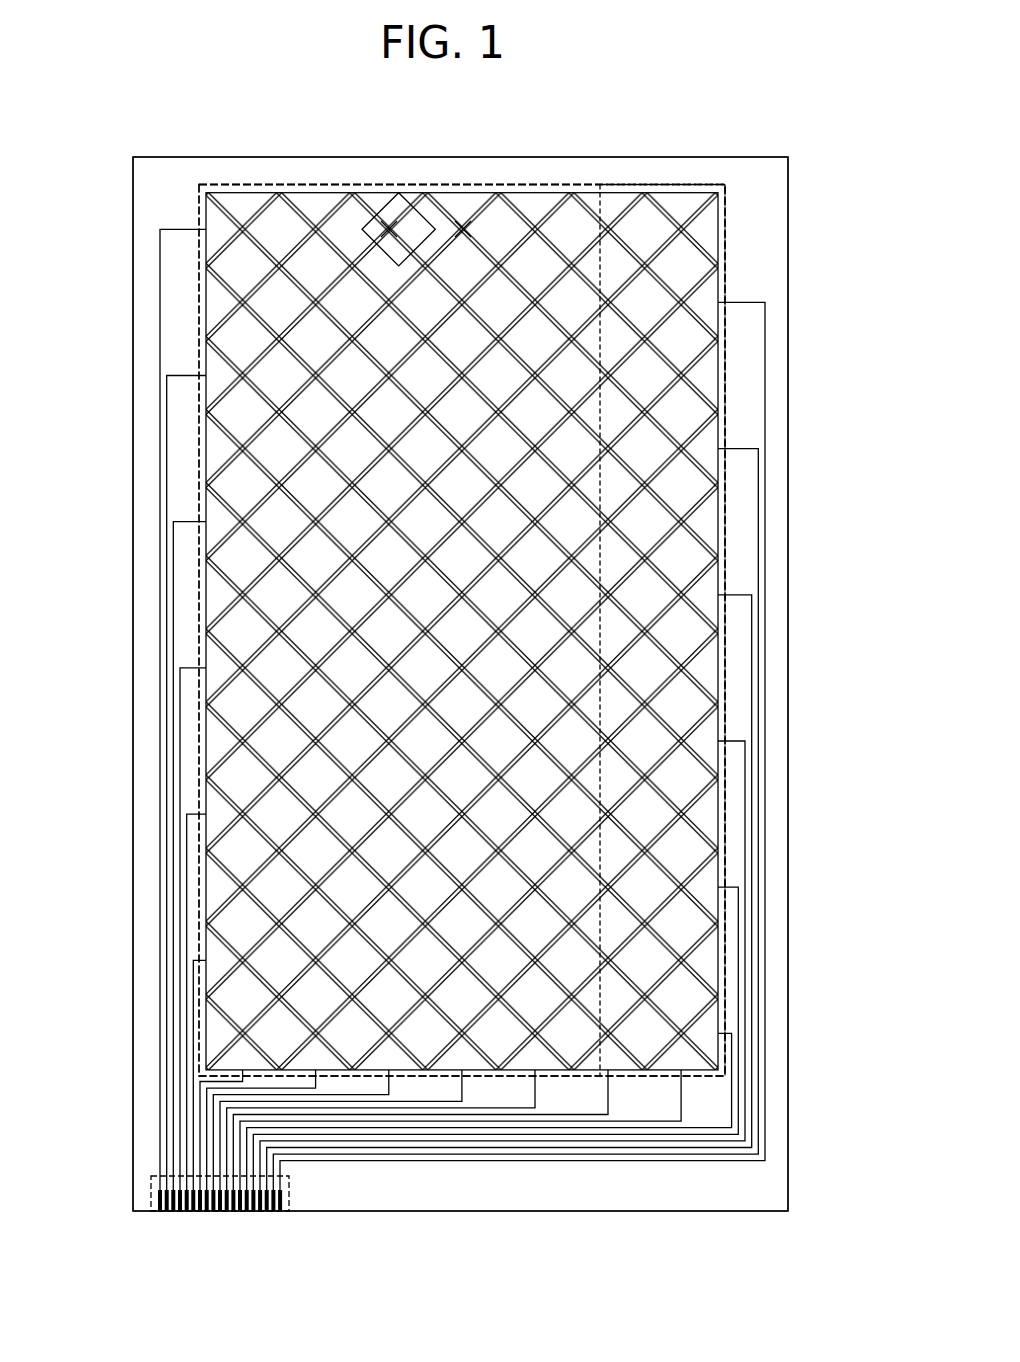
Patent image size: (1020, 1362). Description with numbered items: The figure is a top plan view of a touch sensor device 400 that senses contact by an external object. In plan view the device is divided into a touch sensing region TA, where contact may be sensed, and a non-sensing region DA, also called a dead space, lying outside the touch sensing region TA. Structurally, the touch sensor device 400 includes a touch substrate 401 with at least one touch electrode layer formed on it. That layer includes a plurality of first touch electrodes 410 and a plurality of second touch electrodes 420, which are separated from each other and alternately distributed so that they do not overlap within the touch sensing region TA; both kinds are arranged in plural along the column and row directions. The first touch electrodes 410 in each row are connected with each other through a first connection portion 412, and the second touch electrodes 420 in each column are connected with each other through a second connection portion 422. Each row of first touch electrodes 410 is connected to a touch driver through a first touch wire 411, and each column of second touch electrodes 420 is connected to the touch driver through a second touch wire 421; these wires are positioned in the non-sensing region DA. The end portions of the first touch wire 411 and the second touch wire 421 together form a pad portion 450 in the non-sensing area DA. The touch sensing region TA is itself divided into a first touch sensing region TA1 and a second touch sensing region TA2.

The touch sensor device 400 is at (566, 112).
The touch substrate 401 is at (225, 157).
The non-sensing region DA is at (153, 195).
The touch sensing region TA is at (698, 98).
The first touch sensing region TA1 is at (572, 187).
The second touch sensing region TA2 is at (680, 187).
The first touch electrode 410 is at (507, 227).
The first touch wire 411 is at (160, 287).
The first connection portion 412 is at (463, 228).
The second touch electrode 420 is at (398, 262).
The second touch wire 421 is at (535, 1092).
The second connection portion 422 is at (387, 230).
The pad portion 450 is at (289, 1193).